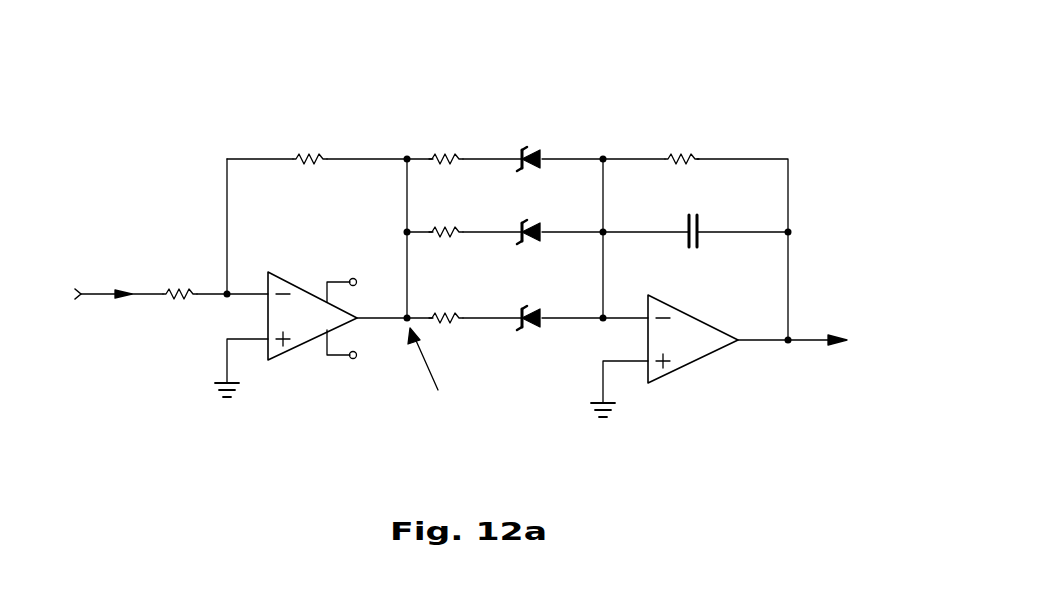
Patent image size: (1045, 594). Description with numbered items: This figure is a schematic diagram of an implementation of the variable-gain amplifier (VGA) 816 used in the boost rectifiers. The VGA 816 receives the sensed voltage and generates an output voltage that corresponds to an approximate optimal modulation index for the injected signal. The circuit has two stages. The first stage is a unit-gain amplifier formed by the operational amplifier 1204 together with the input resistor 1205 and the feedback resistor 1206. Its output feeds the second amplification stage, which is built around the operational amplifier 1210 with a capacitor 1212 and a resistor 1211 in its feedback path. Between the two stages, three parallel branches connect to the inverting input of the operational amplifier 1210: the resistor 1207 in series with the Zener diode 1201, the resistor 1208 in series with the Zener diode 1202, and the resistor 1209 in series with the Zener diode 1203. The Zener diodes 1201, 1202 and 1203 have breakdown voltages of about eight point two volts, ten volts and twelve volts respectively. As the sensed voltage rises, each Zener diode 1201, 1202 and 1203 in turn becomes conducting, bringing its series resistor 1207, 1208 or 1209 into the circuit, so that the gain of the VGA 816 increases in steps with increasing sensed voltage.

The variable-gain amplifier (VGA) 816 is at (466, 228).
The Zener diode 1201 is at (545, 156).
The Zener diode 1202 is at (540, 242).
The Zener diode 1203 is at (540, 328).
The operational amplifier 1204 is at (298, 346).
The resistor 1205 is at (183, 298).
The resistor 1206 is at (312, 164).
The resistor 1207 is at (433, 155).
The resistor 1208 is at (445, 236).
The resistor 1209 is at (460, 322).
The operational amplifier 1210 is at (690, 365).
The resistor 1211 is at (699, 160).
The capacitor 1212 is at (700, 240).